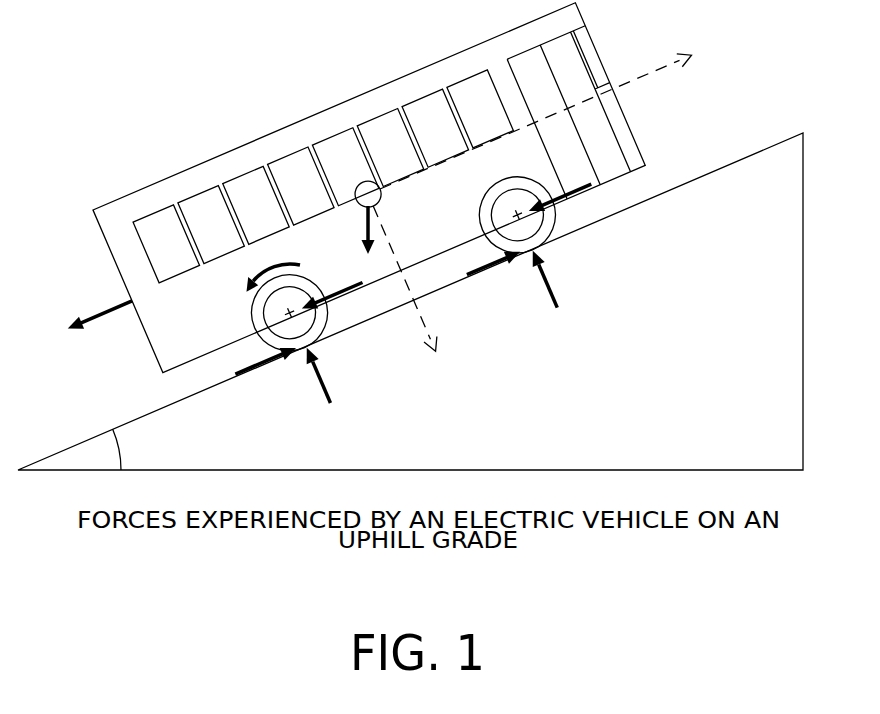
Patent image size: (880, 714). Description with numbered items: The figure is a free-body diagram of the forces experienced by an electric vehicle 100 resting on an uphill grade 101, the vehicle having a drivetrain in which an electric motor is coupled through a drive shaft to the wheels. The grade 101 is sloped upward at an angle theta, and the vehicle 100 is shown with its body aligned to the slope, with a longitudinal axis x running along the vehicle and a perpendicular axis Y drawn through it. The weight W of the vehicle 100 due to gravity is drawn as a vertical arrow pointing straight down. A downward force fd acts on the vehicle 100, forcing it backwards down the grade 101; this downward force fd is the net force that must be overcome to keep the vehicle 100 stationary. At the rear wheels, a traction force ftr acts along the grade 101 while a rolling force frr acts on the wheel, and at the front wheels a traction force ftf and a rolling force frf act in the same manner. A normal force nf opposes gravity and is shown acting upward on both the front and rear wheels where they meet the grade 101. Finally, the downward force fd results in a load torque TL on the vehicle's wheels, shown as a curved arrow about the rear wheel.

The electric vehicle 100 is at (238, 95).
The uphill grade 101 is at (766, 150).
The longitudinal vehicle axis x is at (547, 118).
The vertical vehicle axis Y is at (410, 290).
The weight W is at (358, 230).
The load torque TL is at (260, 285).
The downward force fd is at (86, 316).
The rolling force frr is at (332, 288).
The rolling force frf is at (560, 185).
The traction force ftr is at (266, 373).
The traction force ftf is at (493, 276).
The normal force nf is at (442, 334).